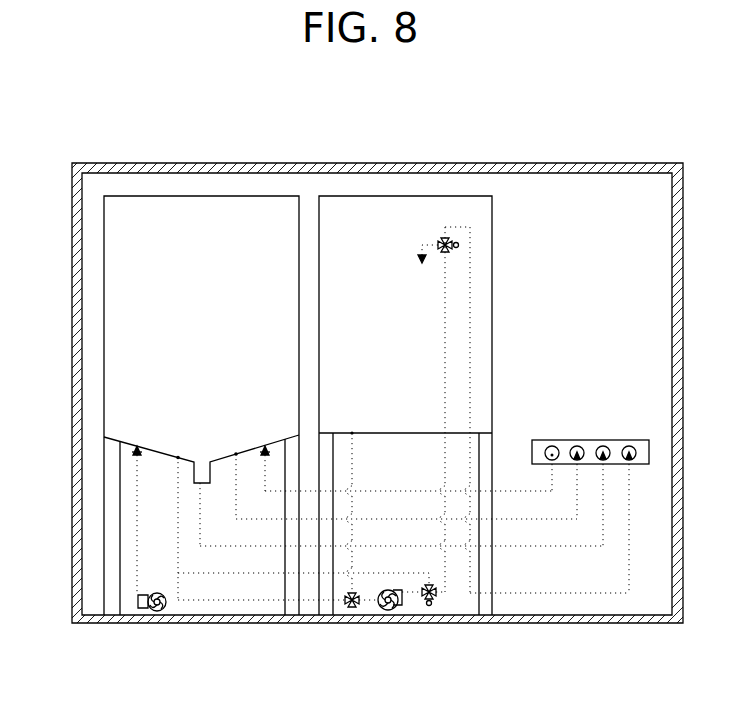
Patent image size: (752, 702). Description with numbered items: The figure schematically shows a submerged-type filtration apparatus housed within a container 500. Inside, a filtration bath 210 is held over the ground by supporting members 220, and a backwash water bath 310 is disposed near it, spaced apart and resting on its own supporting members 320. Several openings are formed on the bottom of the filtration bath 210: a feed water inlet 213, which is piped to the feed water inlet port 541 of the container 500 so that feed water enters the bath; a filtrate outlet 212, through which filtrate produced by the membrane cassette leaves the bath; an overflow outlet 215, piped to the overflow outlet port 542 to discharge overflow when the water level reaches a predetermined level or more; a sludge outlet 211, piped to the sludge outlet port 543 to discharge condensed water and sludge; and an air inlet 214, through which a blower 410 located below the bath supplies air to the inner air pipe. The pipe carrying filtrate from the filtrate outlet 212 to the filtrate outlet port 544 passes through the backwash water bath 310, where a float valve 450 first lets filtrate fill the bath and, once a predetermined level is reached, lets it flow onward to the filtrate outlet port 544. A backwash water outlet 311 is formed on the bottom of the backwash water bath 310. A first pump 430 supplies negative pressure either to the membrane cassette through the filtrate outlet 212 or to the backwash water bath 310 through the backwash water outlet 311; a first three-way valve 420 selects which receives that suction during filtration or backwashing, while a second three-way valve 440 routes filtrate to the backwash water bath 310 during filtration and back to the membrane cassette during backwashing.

The container 500 is at (603, 163).
The filtration bath 210 is at (200, 196).
The backwash water bath 310 is at (400, 196).
The supporting members 220 is at (112, 562).
The supporting members 320 is at (326, 614).
The backwash water outlet 311 is at (352, 433).
The air inlet 214 is at (137, 446).
The filtrate outlet 212 is at (178, 457).
The sludge outlet 211 is at (199, 463).
The overflow outlet 215 is at (236, 454).
The feed water inlet 213 is at (265, 446).
The blower 410 is at (154, 610).
The first 3-way valve 420 is at (352, 608).
The first pump 430 is at (394, 611).
The second 3-way valve 440 is at (430, 607).
The float valve 450 is at (458, 241).
The feed water inlet port 541 is at (552, 446).
The overflow outlet port 542 is at (577, 446).
The sludge outlet port 543 is at (603, 446).
The filtrate outlet port 544 is at (629, 446).